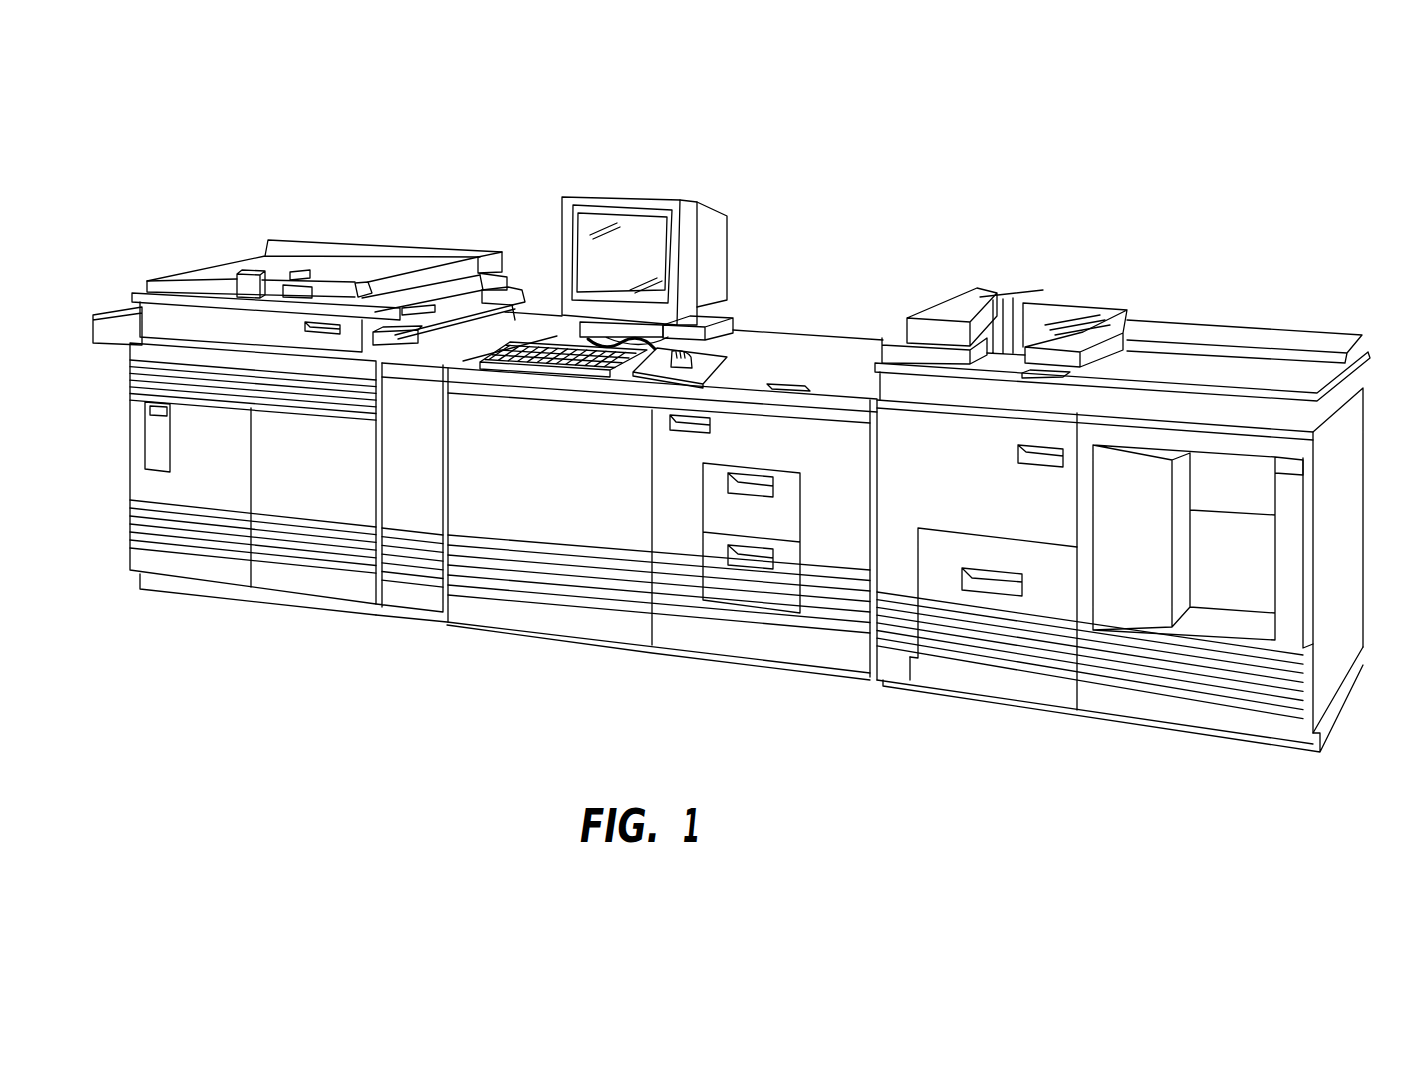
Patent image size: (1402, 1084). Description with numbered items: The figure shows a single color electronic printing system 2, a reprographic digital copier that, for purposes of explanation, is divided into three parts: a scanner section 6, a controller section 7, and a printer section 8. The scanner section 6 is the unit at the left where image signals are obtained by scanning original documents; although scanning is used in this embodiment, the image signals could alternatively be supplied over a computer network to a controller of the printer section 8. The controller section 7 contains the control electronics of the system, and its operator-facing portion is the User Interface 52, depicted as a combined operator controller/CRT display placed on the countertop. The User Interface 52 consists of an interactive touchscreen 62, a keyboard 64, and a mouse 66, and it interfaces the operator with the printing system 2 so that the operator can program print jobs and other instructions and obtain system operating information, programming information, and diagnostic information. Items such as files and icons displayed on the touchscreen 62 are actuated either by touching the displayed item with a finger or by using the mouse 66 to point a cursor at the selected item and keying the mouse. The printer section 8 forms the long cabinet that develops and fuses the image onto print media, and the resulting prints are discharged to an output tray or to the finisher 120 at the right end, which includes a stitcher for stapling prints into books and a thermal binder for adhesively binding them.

The printing system 2 is at (811, 100).
The scanner section 6 is at (365, 226).
The controller section 7 is at (121, 485).
The printer section 8 is at (1300, 759).
The User Interface 52 is at (652, 190).
The interactive touchscreen 62 is at (590, 265).
The keyboard 64 is at (558, 357).
The mouse 66 is at (655, 376).
The finisher 120 is at (1195, 297).